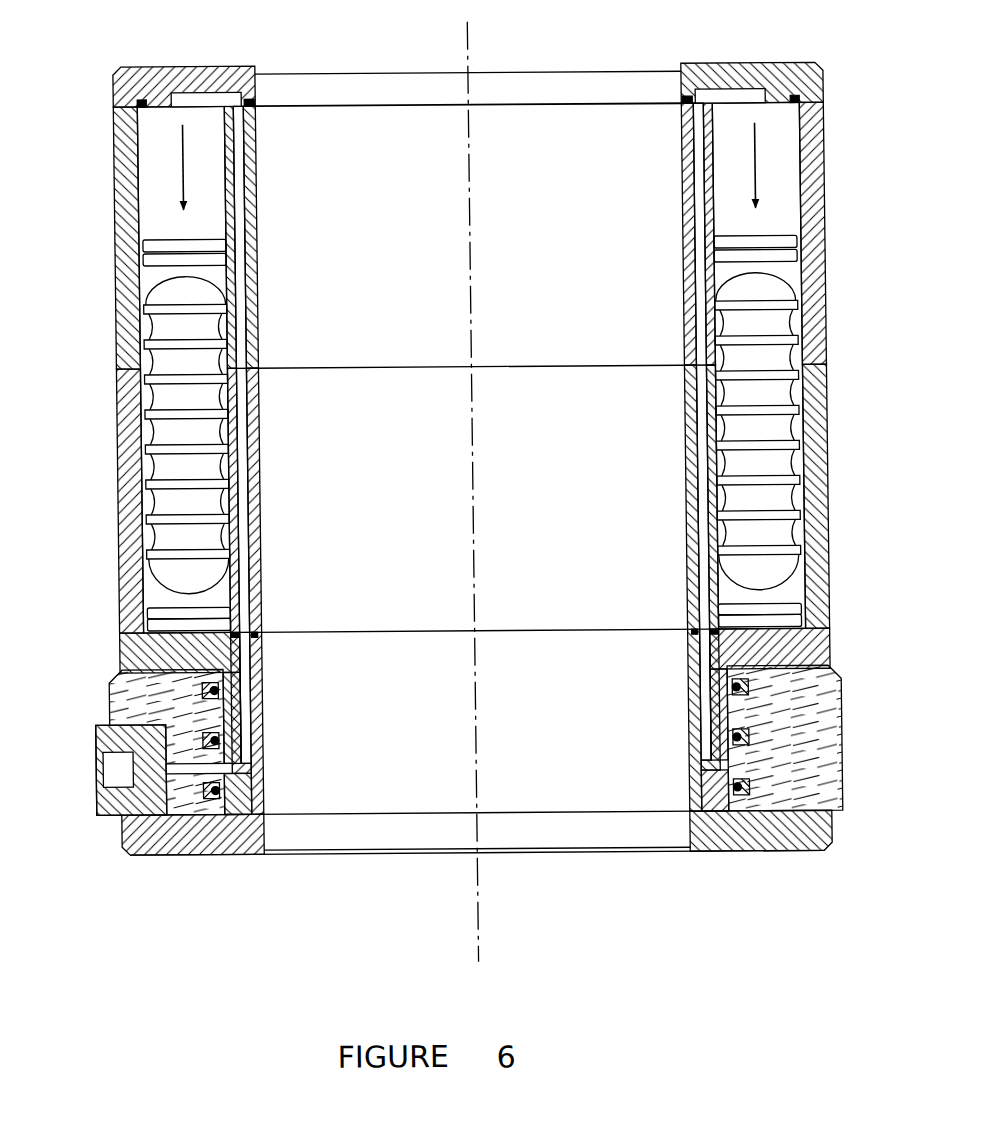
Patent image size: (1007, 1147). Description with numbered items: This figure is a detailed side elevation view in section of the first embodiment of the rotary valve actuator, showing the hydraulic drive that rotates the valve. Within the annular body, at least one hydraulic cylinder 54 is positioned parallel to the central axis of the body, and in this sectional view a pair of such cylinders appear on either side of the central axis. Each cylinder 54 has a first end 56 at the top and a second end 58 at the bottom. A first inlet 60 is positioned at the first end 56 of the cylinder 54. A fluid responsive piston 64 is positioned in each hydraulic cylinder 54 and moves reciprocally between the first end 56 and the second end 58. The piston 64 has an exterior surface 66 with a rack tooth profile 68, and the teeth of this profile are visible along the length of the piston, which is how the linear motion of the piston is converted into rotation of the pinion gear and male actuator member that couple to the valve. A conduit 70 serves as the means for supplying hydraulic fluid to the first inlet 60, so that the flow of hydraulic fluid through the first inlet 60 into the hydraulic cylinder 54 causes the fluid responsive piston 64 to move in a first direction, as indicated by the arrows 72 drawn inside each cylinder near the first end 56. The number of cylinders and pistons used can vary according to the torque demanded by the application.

The hydraulic cylinder 54 is at (150, 166).
The first end 56 is at (133, 101).
The second end 58 is at (152, 622).
The first inlet 60 is at (205, 99).
The fluid responsive piston 64 is at (162, 237).
The exterior surface 66 is at (158, 592).
The rack tooth profile 68 is at (160, 472).
The conduit 70 is at (237, 141).
The arrows 72 is at (188, 167).